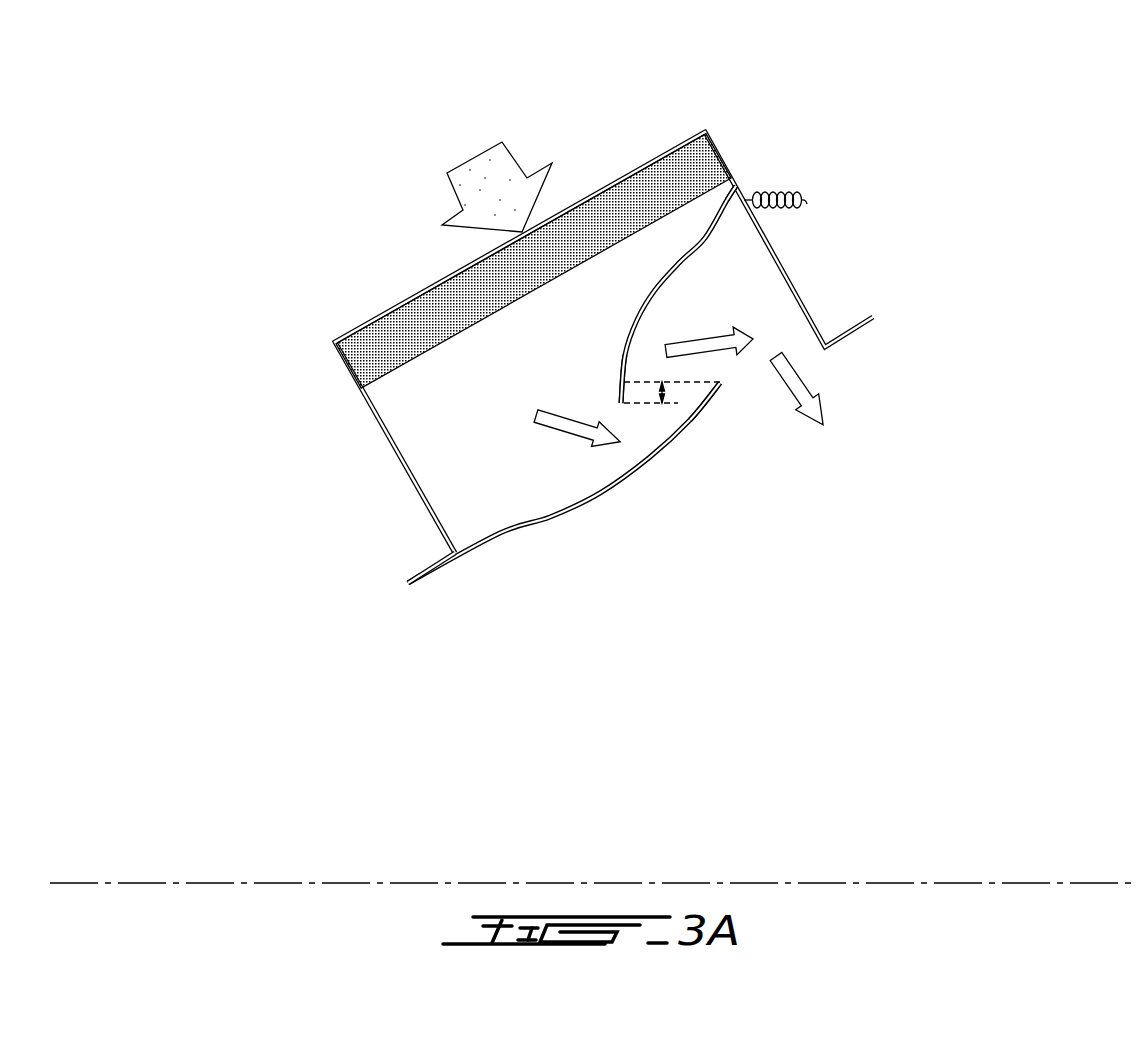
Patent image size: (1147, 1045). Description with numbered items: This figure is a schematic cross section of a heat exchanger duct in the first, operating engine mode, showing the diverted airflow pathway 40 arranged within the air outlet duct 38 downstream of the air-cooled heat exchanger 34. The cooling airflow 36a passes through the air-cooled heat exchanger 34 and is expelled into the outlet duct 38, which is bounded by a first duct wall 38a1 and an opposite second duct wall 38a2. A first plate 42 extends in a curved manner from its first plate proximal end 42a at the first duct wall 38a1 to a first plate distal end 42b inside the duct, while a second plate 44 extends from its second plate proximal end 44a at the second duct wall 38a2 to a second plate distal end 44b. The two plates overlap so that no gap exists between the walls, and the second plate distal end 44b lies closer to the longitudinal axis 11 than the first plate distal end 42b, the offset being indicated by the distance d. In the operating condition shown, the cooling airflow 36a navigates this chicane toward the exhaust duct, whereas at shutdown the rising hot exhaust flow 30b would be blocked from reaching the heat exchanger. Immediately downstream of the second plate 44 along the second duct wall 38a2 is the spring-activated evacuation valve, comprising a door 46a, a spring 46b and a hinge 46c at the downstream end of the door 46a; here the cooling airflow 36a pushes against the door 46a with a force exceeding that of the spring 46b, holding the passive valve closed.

The diverted airflow pathway 40 is at (997, 153).
The air-cooled heat exchanger 34 is at (622, 175).
The cooling airflow 36a is at (488, 177).
The air outlet duct 38 is at (629, 342).
The first duct wall 38a1 is at (400, 458).
The second duct wall 38a2 is at (798, 292).
The second plate 44 is at (738, 290).
The second plate proximal end 44a is at (736, 186).
The second plate distal end 44b is at (621, 403).
The first plate 42 is at (557, 532).
The first plate proximal end 42a is at (455, 553).
The first plate distal end 42b is at (720, 383).
The hot exhaust flow 30b is at (423, 585).
The door 46a is at (745, 192).
The spring 46b is at (805, 200).
The hinge 46c is at (755, 218).
The longitudinal axis 11 is at (1112, 883).